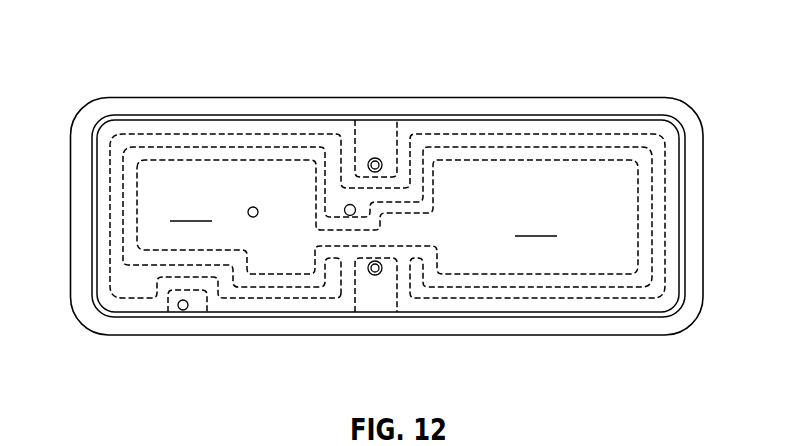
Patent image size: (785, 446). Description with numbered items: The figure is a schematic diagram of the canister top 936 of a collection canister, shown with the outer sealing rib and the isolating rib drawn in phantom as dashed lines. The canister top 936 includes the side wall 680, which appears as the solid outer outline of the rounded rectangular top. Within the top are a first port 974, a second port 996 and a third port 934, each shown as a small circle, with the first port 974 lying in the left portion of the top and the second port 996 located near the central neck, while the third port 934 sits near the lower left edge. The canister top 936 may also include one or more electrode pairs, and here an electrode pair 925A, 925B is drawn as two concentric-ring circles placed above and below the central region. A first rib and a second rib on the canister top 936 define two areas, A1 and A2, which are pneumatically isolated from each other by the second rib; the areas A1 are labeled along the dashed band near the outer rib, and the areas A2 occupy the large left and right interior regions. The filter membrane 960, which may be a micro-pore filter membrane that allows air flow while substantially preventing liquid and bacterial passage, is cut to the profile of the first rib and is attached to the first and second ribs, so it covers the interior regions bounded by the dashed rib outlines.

The canister top 936 is at (603, 45).
The side wall 680 is at (688, 235).
The filter membrane 960 is at (603, 197).
The electrode 925A is at (377, 153).
The electrode 925B is at (381, 283).
The third port 934 is at (181, 313).
The second port 996 is at (342, 208).
The first port 974 is at (251, 205).
The area A1 is at (338, 190).
The area A2 is at (362, 217).